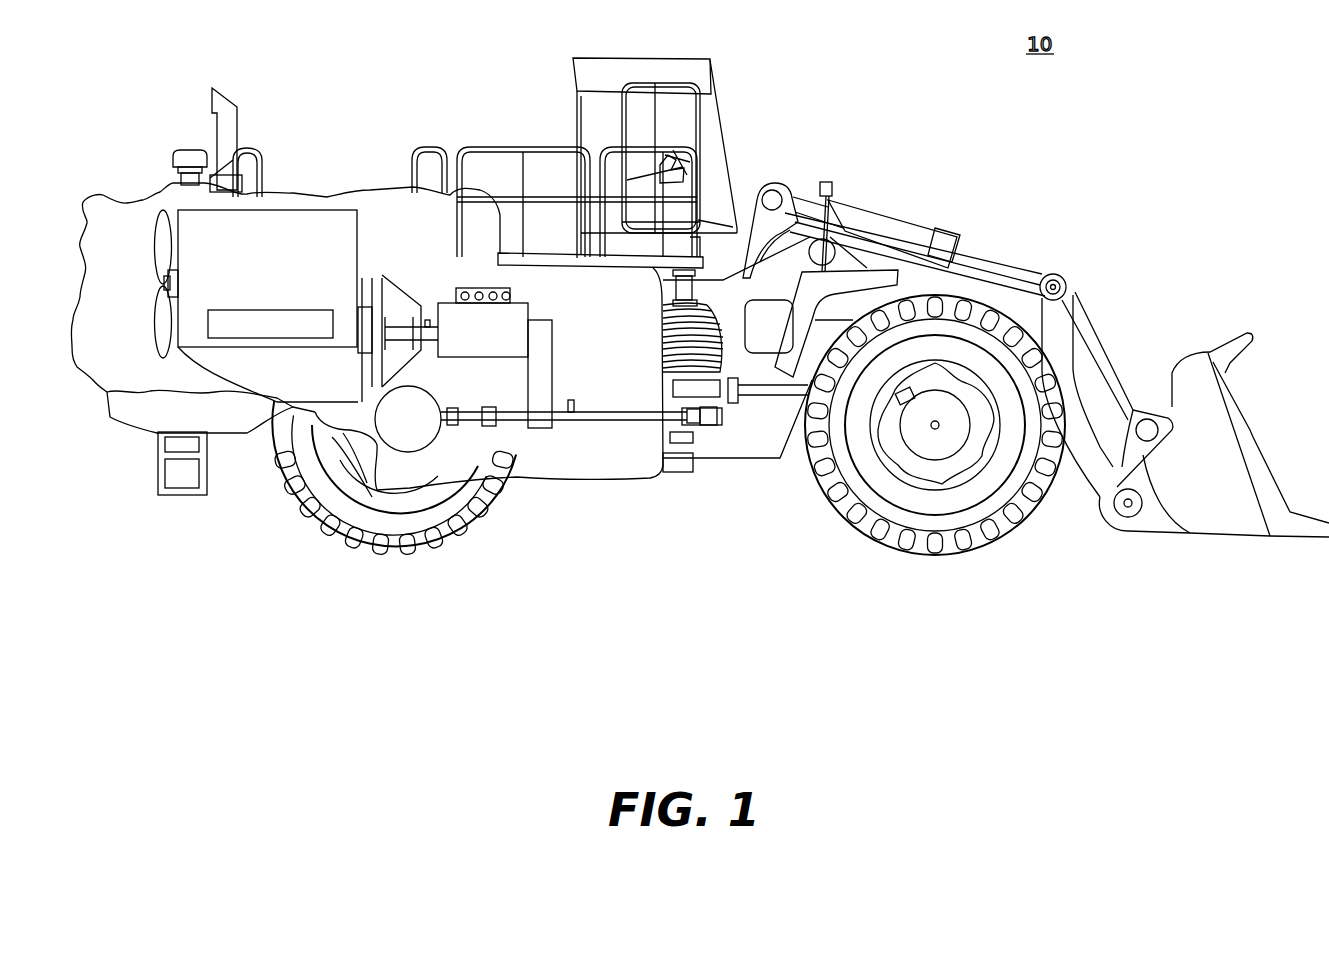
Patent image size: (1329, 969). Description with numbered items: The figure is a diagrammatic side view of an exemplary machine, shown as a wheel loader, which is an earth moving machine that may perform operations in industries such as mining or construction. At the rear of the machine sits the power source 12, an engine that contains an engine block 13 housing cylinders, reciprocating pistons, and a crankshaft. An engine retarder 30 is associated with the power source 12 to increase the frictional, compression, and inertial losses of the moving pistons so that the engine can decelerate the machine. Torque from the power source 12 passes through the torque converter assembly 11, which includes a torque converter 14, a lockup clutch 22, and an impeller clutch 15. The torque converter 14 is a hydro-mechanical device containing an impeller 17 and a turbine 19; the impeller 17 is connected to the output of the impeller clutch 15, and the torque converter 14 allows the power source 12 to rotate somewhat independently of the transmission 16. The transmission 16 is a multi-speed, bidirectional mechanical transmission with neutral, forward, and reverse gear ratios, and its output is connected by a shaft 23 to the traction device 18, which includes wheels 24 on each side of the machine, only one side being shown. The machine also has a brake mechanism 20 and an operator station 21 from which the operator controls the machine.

The torque converter assembly 11 is at (427, 247).
The power source 12 is at (146, 283).
The engine block 13 is at (172, 190).
The torque converter 14 is at (405, 272).
The impeller clutch 15 is at (358, 367).
The transmission 16 is at (530, 306).
The impeller 17 is at (383, 346).
The traction device 18 is at (668, 447).
The turbine 19 is at (403, 348).
The brake mechanism 20 is at (928, 443).
The operator station 21 is at (675, 118).
The lockup clutch 22 is at (412, 333).
The shaft 23 is at (512, 425).
The wheels 24 is at (445, 548).
The engine retarder 30 is at (270, 310).